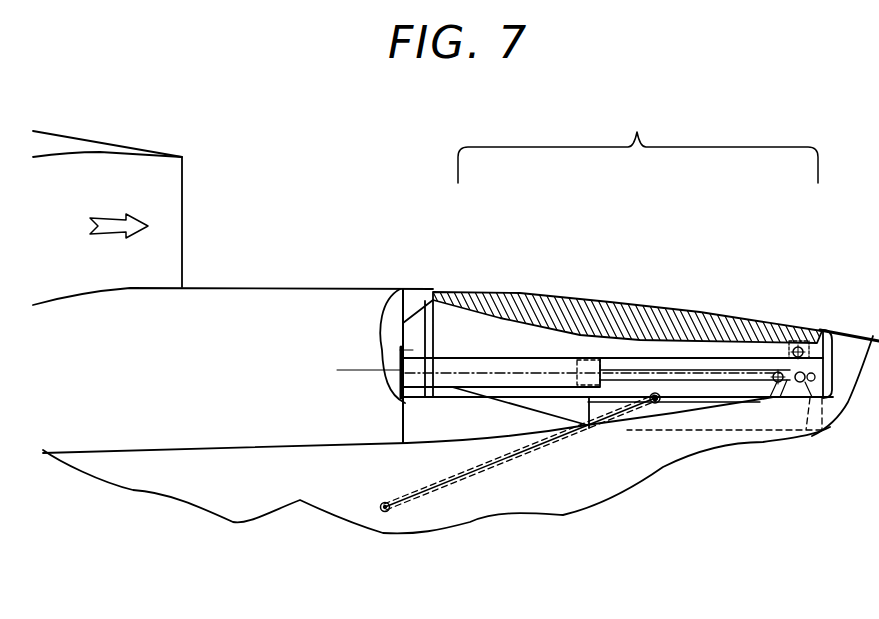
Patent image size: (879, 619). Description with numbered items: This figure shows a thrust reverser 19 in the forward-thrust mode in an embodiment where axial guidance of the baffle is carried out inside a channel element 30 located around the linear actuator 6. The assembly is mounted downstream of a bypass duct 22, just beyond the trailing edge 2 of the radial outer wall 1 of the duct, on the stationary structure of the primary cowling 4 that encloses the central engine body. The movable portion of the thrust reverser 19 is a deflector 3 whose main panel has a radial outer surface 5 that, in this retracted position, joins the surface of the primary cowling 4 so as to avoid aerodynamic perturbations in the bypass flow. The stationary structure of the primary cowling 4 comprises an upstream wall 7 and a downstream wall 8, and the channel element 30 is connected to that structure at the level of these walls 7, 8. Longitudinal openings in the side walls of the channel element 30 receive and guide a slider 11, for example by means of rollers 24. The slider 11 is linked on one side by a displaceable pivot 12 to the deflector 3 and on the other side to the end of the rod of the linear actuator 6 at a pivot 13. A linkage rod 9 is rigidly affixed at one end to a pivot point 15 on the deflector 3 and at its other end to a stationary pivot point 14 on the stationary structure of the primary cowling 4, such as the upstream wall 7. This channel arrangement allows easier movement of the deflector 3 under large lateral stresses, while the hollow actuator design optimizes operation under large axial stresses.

The radial outer wall 1 is at (100, 152).
The trailing edge 2 is at (182, 157).
The deflector 3 is at (668, 315).
The primary cowling 4 is at (320, 303).
The radial outer surface 5 is at (578, 357).
The linear actuator 6 is at (483, 357).
The upstream wall 7 is at (400, 402).
The downstream wall 8 is at (845, 333).
The linkage rod 9 is at (510, 457).
The slider 11 is at (788, 403).
The displaceable pivot 12 is at (797, 345).
The pivot 13 is at (767, 401).
The stationary pivot point 14 is at (390, 510).
The pivot point 15 is at (656, 404).
The thrust reverser 19 is at (638, 141).
The bypass duct 22 is at (117, 246).
The rollers 24 is at (810, 407).
The channel element 30 is at (732, 362).